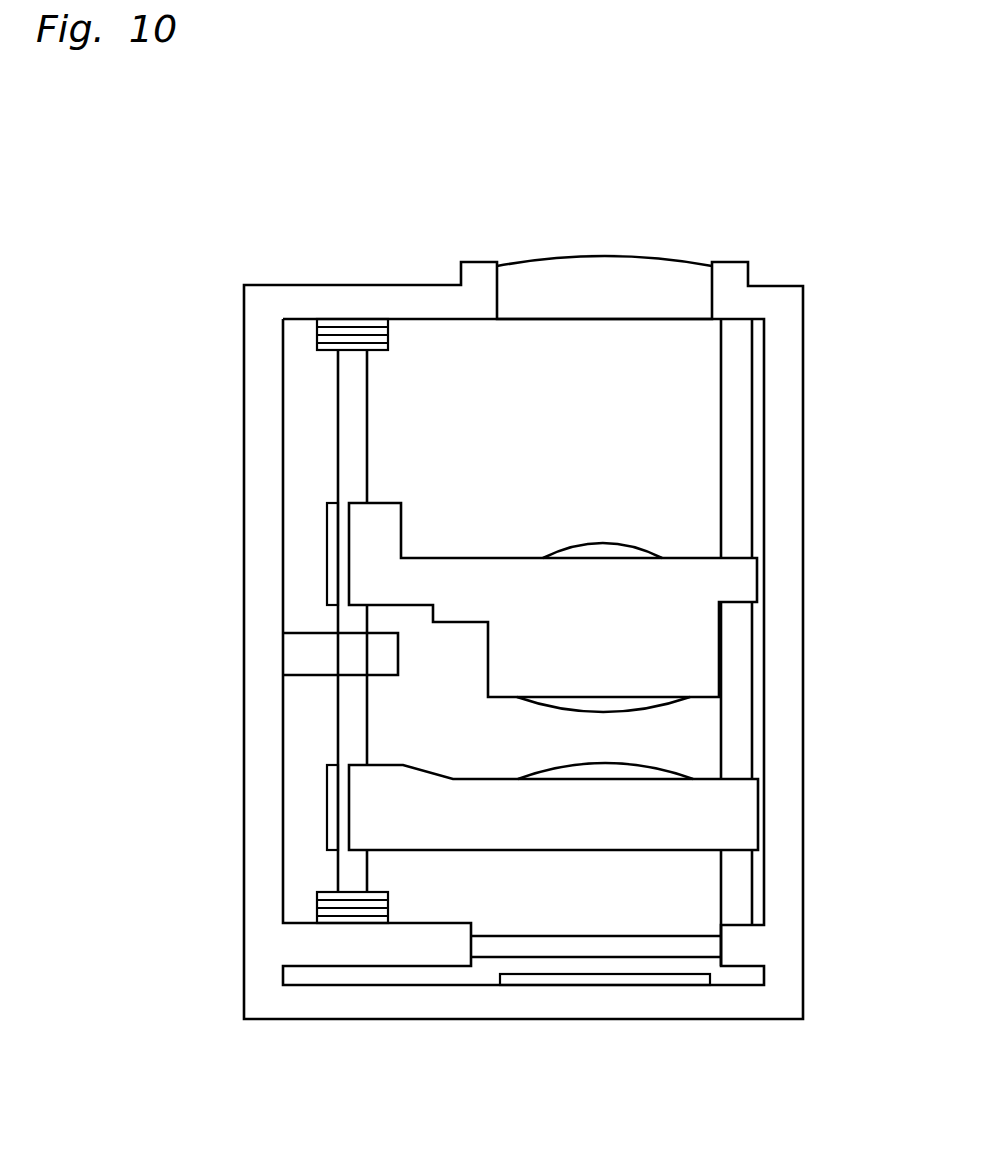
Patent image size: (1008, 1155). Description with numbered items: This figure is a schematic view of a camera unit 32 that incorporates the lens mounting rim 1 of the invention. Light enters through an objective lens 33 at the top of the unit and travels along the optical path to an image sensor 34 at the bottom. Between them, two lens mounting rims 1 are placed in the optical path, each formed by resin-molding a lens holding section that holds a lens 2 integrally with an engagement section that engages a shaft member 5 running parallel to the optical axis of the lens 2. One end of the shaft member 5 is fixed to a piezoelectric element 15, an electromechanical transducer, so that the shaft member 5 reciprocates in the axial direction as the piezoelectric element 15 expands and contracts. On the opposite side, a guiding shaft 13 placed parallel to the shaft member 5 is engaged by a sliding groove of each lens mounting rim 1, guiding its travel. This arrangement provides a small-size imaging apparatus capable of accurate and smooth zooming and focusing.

The camera unit 32 is at (437, 238).
The objective lens 33 is at (600, 264).
The guiding shaft 13 is at (743, 378).
The shaft member 5 is at (338, 427).
The piezoelectric element 15 is at (317, 335).
The lens 2 is at (607, 545).
The lens mounting rim 1 is at (326, 566).
The image sensor 34 is at (604, 982).